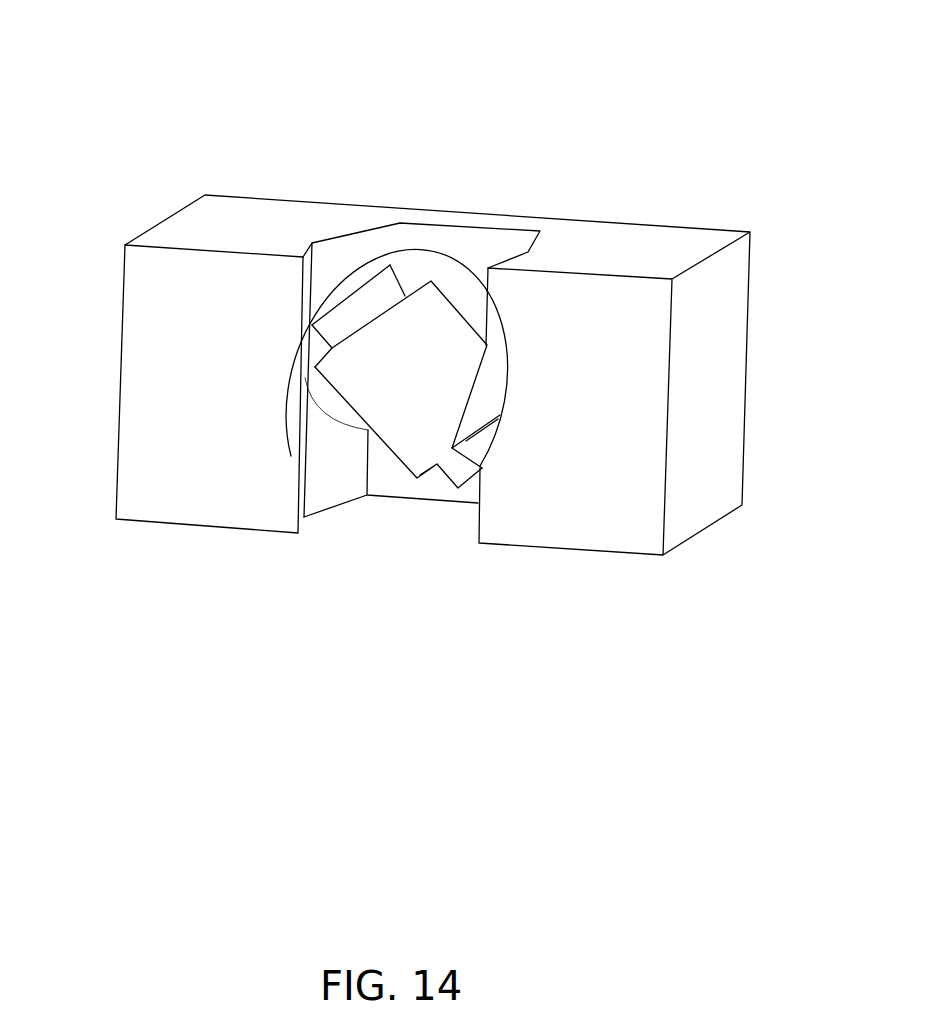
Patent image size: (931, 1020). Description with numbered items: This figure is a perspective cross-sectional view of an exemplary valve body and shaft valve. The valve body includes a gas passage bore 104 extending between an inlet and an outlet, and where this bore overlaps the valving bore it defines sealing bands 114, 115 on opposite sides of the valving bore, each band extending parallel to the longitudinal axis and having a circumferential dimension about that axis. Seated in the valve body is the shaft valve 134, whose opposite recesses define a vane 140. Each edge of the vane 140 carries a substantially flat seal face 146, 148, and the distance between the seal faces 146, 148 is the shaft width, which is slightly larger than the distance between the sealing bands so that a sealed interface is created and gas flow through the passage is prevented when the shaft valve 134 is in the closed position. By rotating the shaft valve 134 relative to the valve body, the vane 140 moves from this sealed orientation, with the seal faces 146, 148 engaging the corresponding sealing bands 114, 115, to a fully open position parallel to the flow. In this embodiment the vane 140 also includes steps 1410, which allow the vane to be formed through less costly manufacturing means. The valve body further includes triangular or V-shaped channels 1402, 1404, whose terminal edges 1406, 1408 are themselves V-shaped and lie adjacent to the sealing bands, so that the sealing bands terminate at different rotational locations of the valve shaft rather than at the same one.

The gas passage bore 104 is at (309, 218).
The sealing band 114 is at (287, 373).
The sealing band 115 is at (503, 395).
The shaft valve 134 is at (388, 408).
The vane 140 is at (440, 330).
The seal face 146 is at (336, 302).
The seal face 148 is at (472, 483).
The V-shaped channel 1402 is at (304, 517).
The V-shaped channel 1404 is at (540, 230).
The terminal edge 1406 is at (303, 356).
The terminal edge 1408 is at (303, 395).
The steps 1410 is at (338, 336).